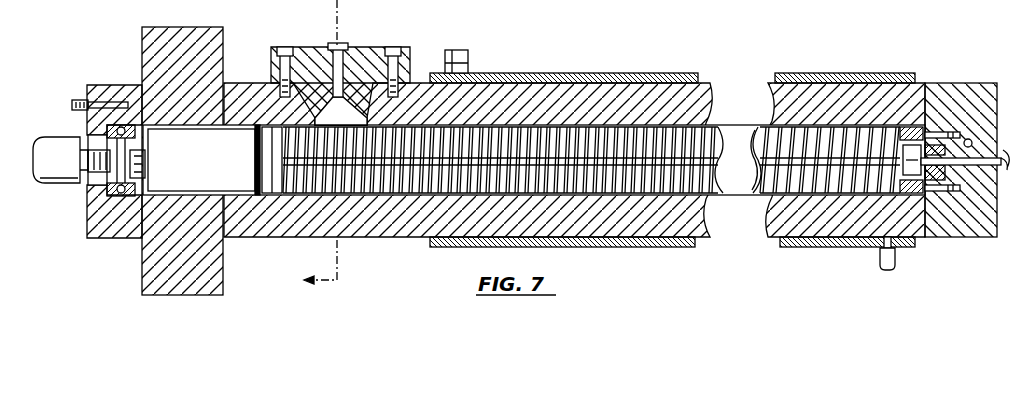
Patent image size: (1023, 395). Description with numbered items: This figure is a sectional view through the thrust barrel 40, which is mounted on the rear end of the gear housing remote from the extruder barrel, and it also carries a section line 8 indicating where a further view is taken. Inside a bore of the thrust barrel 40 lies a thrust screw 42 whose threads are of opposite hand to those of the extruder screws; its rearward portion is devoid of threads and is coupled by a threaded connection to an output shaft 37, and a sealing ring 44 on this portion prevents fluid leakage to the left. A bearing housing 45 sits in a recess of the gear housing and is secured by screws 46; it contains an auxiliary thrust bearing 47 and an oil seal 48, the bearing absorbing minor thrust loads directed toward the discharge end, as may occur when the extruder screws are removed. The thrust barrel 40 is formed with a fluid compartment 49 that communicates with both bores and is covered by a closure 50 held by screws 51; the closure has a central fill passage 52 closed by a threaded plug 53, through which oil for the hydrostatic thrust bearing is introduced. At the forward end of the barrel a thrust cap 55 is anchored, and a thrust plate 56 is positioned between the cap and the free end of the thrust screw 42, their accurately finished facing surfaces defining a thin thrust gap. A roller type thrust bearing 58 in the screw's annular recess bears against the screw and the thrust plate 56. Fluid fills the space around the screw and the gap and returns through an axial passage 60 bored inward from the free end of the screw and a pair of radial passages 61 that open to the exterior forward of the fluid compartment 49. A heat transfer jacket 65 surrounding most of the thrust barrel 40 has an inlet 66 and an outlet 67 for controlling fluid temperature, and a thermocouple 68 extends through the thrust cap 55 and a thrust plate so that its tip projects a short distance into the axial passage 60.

The output shaft 37 is at (55, 150).
The thrust barrel 40 is at (223, 82).
The thrust screw 42 is at (273, 196).
The sealing ring 44 is at (258, 196).
The bearing housing 45 is at (98, 92).
The screw 46 is at (72, 102).
The auxiliary thrust bearing 47 is at (87, 198).
The oil seal 48 is at (128, 197).
The fluid compartment 49 is at (349, 121).
The closure 50 is at (305, 48).
The screw 51 is at (285, 48).
The central fill passage 52 is at (372, 50).
The threaded plug 53 is at (340, 44).
The thrust cap 55 is at (965, 83).
The thrust plate 56 is at (937, 200).
The roller type thrust bearing 58 is at (915, 125).
The axial passage 60 is at (757, 196).
The radial passage 61 is at (427, 132).
The heat transfer jacket 65 is at (662, 73).
The inlet 66 is at (880, 260).
The outlet 67 is at (468, 60).
The thermocouple 68 is at (1002, 168).
The section line 8 is at (310, 147).